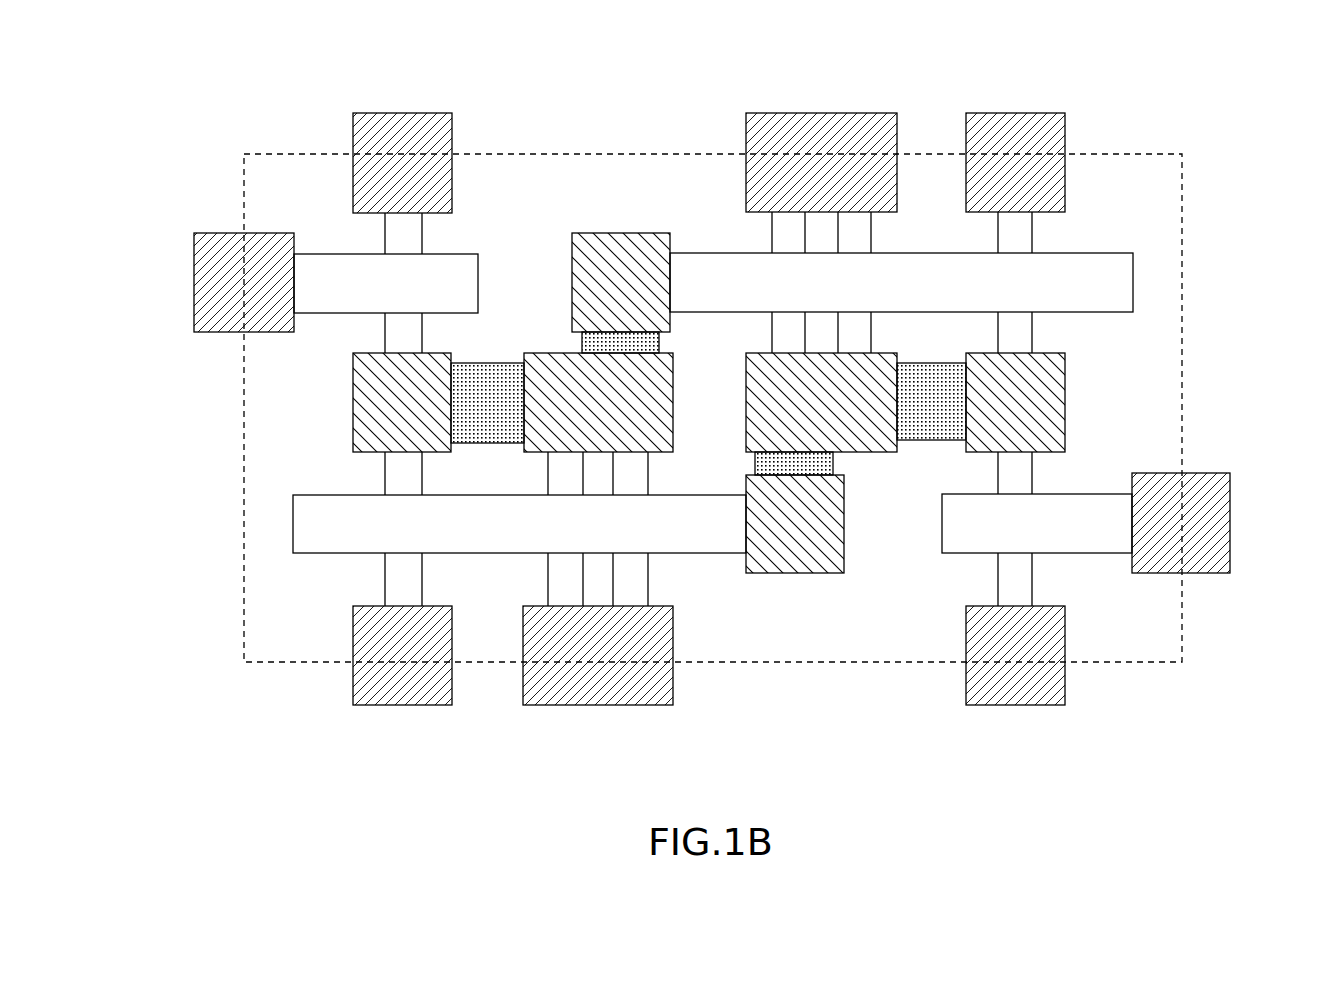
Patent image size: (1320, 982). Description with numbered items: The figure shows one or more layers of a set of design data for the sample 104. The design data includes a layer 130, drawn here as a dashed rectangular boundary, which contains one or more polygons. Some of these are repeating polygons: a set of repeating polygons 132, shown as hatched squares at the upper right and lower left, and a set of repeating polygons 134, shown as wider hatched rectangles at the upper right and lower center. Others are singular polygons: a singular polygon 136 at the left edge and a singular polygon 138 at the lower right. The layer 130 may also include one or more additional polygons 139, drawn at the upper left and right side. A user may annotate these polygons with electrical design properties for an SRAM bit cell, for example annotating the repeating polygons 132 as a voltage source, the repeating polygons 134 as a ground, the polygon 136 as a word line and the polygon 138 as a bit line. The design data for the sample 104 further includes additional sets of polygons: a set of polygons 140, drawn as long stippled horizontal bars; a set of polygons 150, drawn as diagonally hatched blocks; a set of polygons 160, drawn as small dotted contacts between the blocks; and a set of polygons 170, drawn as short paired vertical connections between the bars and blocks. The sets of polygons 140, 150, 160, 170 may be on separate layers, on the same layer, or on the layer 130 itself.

The sample 104 is at (230, 80).
The layer 130 is at (290, 154).
The set of repeating polygons 132 is at (1015, 113).
The set of repeating polygons 134 is at (820, 113).
The singular polygon 136 is at (194, 285).
The singular polygon 138 is at (1013, 705).
The additional polygons 139 is at (402, 113).
The set of polygons 140 is at (478, 285).
The set of polygons 150 is at (618, 233).
The set of polygons 160 is at (582, 346).
The set of polygons 170 is at (772, 240).